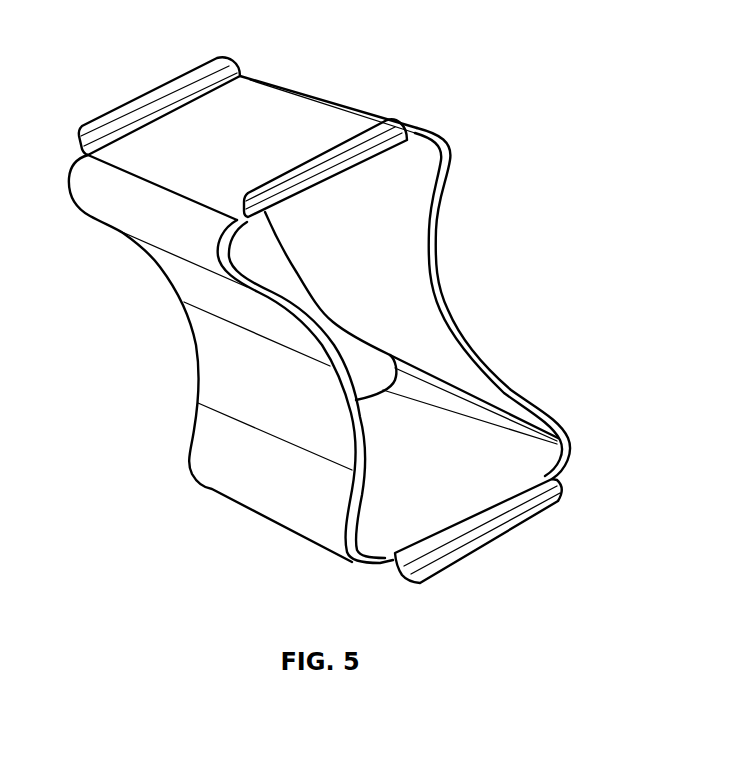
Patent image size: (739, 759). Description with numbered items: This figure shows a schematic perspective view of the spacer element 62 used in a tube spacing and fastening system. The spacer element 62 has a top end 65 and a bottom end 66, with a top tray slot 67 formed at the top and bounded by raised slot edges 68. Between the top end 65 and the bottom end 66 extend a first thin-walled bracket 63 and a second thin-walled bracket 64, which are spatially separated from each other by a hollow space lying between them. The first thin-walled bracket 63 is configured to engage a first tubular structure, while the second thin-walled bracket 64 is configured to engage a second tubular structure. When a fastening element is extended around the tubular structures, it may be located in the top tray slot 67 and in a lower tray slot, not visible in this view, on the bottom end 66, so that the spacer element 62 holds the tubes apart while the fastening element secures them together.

The spacer element 62 is at (565, 72).
The first thin-walled bracket 63 is at (213, 368).
The second thin-walled bracket 64 is at (497, 381).
The top end 65 is at (244, 151).
The bottom end 66 is at (351, 576).
The top tray slot 67 is at (286, 103).
The raised slot edges 68 is at (178, 67).